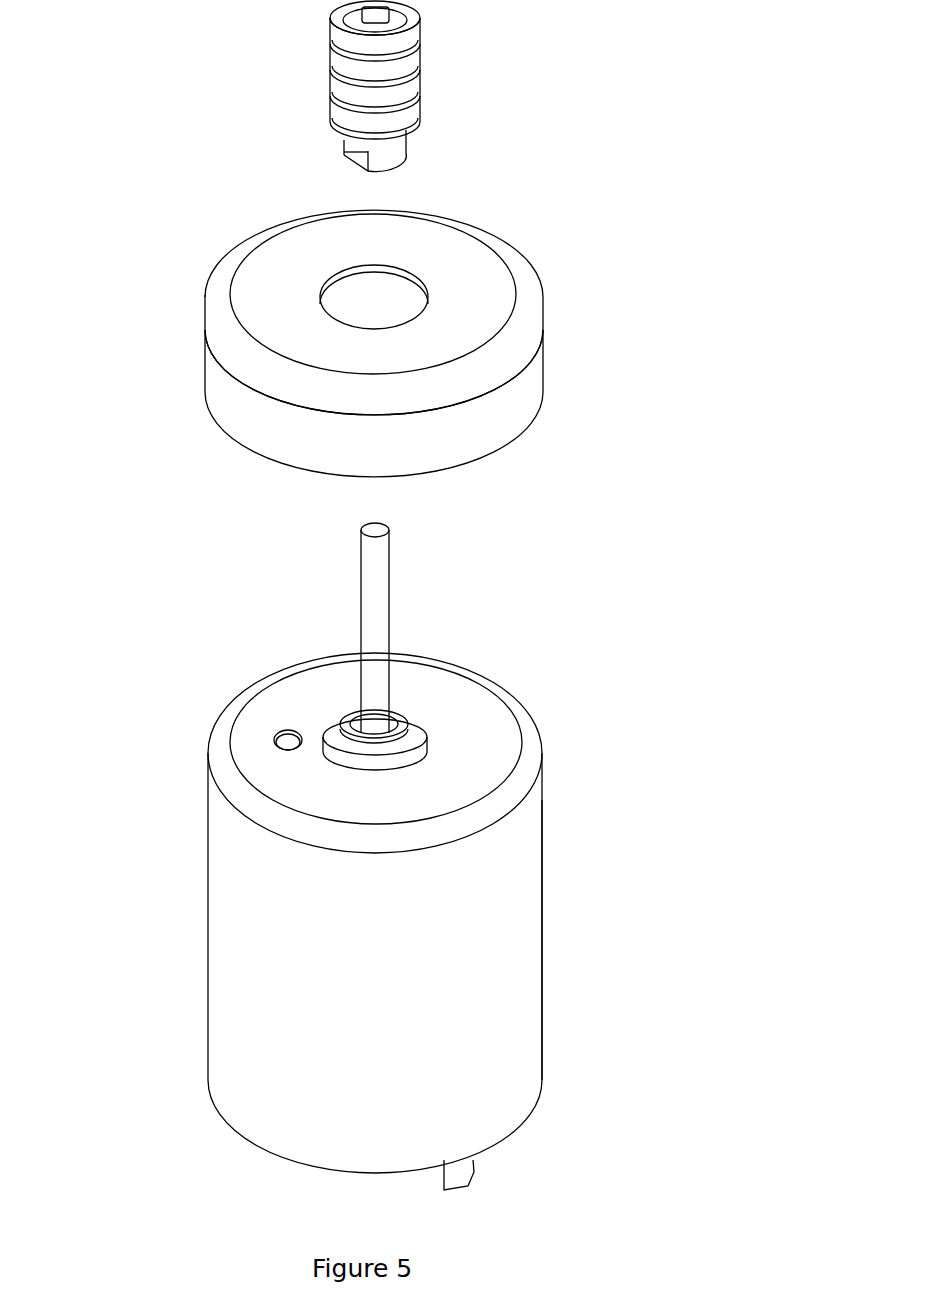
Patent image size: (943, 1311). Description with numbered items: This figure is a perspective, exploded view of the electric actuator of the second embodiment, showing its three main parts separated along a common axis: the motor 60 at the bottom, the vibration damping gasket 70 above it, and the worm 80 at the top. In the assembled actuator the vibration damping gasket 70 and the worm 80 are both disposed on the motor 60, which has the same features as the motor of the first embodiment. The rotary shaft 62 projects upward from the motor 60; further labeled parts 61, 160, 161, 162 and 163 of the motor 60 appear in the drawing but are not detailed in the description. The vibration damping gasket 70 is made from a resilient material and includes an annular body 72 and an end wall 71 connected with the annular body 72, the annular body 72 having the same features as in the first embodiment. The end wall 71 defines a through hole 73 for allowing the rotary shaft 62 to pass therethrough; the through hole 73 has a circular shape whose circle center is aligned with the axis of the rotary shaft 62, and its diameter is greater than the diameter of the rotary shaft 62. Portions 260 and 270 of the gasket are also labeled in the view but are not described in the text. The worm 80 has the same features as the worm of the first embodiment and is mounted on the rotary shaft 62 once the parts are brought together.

The motor 60 is at (365, 856).
The motor housing 61 is at (245, 848).
The rotary shaft 62 is at (372, 601).
The vibration damping gasket 70 is at (376, 343).
The end wall 71 is at (470, 296).
The annular body 72 is at (530, 383).
The through hole 73 is at (390, 290).
The worm 80 is at (420, 82).
The end cap 160 is at (408, 680).
The cylindrical side wall 161 is at (500, 930).
The bearing boss 162 is at (425, 743).
The bearing 163 is at (400, 718).
The upper ring of disc 260 is at (265, 314).
The lower ring of disc 270 is at (240, 387).